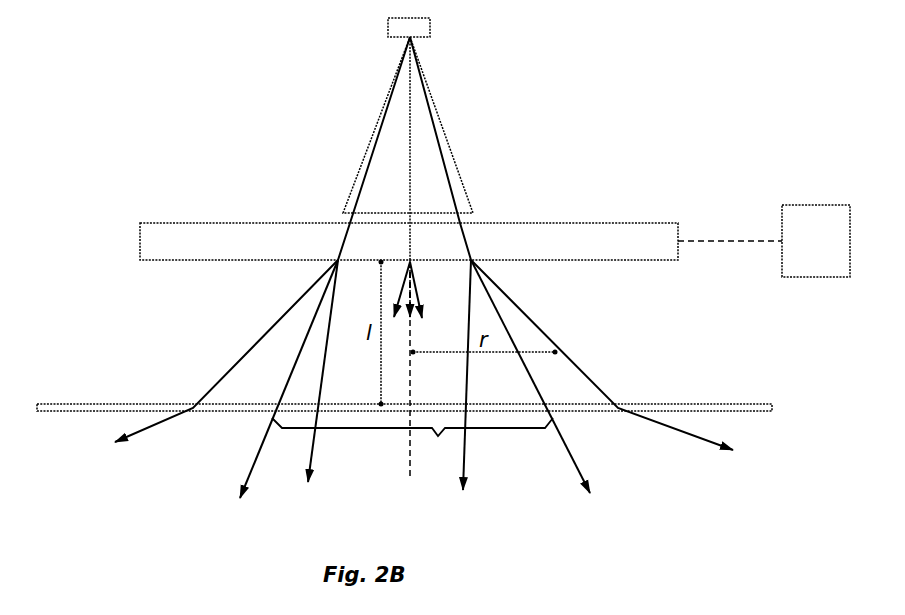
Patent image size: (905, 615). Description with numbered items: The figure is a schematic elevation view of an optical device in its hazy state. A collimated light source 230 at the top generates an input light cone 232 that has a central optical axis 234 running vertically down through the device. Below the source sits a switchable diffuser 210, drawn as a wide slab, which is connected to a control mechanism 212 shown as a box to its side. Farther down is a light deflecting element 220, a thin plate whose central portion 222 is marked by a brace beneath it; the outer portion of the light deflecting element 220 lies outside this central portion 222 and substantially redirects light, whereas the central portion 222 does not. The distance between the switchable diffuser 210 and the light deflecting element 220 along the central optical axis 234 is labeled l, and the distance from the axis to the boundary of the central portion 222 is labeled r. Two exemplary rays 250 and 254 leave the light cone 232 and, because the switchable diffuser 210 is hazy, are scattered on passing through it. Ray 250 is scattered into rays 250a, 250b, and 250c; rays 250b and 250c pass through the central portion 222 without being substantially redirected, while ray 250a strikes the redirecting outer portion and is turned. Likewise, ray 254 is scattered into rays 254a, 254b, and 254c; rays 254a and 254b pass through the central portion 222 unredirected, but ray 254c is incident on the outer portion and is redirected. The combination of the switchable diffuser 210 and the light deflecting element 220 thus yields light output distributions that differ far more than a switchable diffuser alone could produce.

The collimated light source 230 is at (431, 28).
The input light cone 232 is at (441, 126).
The central optical axis 234 is at (408, 153).
The ray 250 is at (350, 222).
The ray 254 is at (461, 222).
The switchable diffuser 210 is at (588, 222).
The control mechanism 212 is at (764, 241).
The light deflecting element 220 is at (92, 403).
The central portion 222 is at (412, 441).
The ray 250a is at (157, 427).
The ray 250b is at (250, 477).
The ray 250c is at (313, 446).
The ray 254a is at (468, 463).
The ray 254b is at (577, 462).
The ray 254c is at (702, 442).